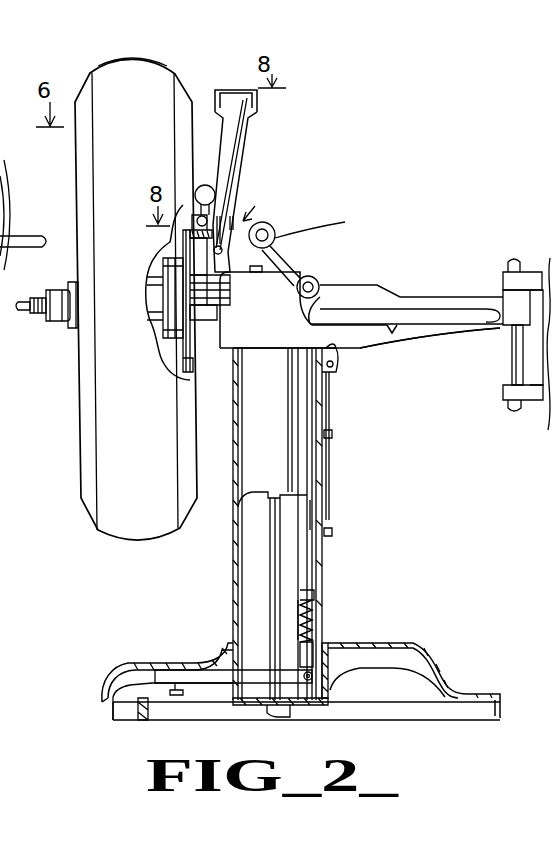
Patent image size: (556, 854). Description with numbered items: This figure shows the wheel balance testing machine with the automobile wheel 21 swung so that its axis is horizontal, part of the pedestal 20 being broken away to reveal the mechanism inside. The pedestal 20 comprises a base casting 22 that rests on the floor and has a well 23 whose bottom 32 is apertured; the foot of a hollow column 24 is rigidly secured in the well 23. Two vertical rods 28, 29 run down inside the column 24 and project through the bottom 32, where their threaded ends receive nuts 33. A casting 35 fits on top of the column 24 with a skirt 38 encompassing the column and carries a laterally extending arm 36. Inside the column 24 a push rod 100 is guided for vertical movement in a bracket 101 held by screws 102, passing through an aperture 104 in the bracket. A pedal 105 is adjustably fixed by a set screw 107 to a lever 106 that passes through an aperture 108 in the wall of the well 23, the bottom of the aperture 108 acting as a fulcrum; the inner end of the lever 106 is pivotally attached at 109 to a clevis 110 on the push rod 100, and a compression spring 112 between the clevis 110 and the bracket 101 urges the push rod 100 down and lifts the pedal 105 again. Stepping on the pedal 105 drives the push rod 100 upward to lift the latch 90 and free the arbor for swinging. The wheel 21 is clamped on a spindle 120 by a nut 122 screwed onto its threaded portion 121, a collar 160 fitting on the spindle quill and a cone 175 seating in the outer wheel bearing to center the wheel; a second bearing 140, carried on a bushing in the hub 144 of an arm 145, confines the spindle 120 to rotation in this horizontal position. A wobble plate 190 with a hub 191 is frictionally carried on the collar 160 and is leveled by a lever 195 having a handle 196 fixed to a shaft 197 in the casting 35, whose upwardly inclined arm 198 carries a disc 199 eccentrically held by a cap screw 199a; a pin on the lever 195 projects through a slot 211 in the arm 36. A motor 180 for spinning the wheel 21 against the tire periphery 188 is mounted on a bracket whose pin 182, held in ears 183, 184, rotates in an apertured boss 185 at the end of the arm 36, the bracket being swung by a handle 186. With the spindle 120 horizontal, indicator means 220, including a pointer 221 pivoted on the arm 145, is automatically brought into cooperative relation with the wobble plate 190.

The pedestal 20 is at (324, 569).
The automobile wheel 21 is at (80, 430).
The base casting 22 is at (436, 667).
The well 23 is at (328, 689).
The hollow column 24 is at (320, 631).
The vertical rod 28 is at (270, 611).
The vertical rod 29 is at (270, 526).
The bottom of the well 32 is at (302, 706).
The nut 33 is at (262, 717).
The casting 35 is at (270, 346).
The arm 36 is at (412, 333).
The skirt 38 is at (221, 347).
The latch 90 is at (338, 354).
The push rod 100 is at (326, 500).
The bracket 101 is at (322, 519).
The screws 102 is at (332, 434).
The aperture 104 is at (322, 598).
The pedal 105 is at (122, 666).
The lever 106 is at (192, 636).
The set screw 107 is at (179, 696).
The aperture 108 is at (210, 670).
The pivotal attachment 109 is at (328, 708).
The clevis 110 is at (330, 650).
The compression spring 112 is at (318, 615).
The spindle 120 is at (31, 313).
The threaded portion 121 is at (33, 298).
The nut 122 is at (60, 322).
The second bearing 140 is at (230, 294).
The hub 144 is at (216, 320).
The arm 145 is at (247, 174).
The collar 160 is at (158, 274).
The cone 175 is at (78, 312).
The motor 180 is at (2, 222).
The pin 182 is at (512, 374).
The ear 183 is at (536, 398).
The ear 184 is at (526, 272).
The apertured boss 185 is at (500, 300).
The handle 186 is at (30, 241).
The tire periphery 188 is at (136, 60).
The wobble plate 190 is at (192, 368).
The hub 191 is at (172, 346).
The lever 195 is at (392, 300).
The handle 196 is at (466, 318).
The shaft 197 is at (320, 281).
The upwardly inclined arm 198 is at (290, 260).
The disc 199 is at (280, 228).
The cap screw 199a is at (330, 223).
The slot 211 is at (386, 336).
The indicator means 220 is at (263, 205).
The pointer 221 is at (240, 150).